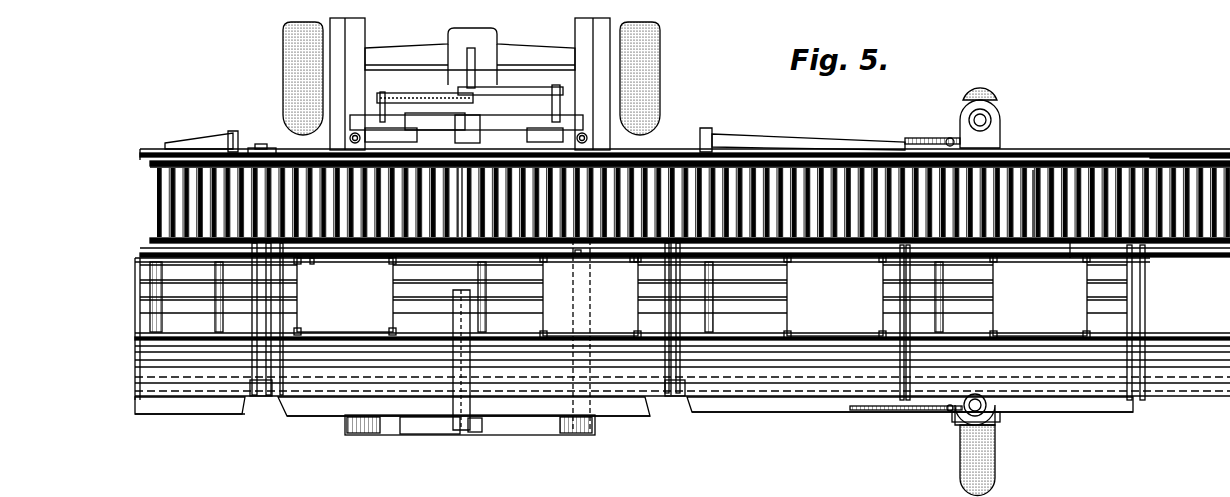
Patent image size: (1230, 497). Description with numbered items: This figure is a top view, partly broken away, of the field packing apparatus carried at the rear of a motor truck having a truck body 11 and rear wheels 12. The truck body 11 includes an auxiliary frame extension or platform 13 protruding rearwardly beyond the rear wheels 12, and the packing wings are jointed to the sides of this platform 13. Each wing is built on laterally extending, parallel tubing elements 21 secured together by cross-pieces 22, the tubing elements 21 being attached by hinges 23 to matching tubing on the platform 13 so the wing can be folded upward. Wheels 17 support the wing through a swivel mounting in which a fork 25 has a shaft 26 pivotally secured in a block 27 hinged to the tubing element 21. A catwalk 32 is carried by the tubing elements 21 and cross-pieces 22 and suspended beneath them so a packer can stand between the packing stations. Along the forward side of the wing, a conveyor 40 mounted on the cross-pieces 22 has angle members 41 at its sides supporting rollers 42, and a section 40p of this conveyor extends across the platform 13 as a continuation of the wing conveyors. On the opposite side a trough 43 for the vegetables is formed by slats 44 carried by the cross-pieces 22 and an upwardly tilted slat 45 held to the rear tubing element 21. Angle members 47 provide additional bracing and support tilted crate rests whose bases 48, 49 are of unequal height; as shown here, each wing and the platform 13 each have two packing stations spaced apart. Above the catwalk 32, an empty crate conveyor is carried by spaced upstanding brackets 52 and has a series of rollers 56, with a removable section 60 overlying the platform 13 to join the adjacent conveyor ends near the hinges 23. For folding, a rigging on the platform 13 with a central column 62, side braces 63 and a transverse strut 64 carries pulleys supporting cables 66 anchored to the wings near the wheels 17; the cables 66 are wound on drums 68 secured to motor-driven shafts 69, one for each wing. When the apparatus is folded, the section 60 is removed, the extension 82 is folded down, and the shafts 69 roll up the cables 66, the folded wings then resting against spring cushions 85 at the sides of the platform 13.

The truck body 11 is at (342, 42).
The rear wheels 12 is at (283, 53).
The auxiliary frame extension or platform 13 is at (350, 421).
The wheels 17 is at (1000, 96).
The tubing elements 21 is at (140, 150).
The cross-pieces 22 is at (670, 285).
The hinges 23 is at (253, 148).
The fork 25 is at (1002, 450).
The shaft 26 is at (978, 120).
The block 27 is at (1003, 118).
The catwalk 32 is at (147, 292).
The conveyor 40 is at (1053, 178).
The section of the conveyor 40p is at (640, 155).
The angle members 41 is at (1034, 172).
The rollers 42 is at (140, 338).
The trough 43 is at (147, 424).
The slats 44 is at (140, 368).
The upwardly tilted slat 45 is at (206, 410).
The angle members 47 is at (578, 255).
The base 48 is at (634, 260).
The base 49 is at (298, 260).
The upstanding brackets 52 is at (1145, 156).
The rollers 56 is at (178, 210).
The removable section 60 is at (280, 150).
The central column 62 is at (484, 120).
The side braces 63 is at (363, 434).
The transverse strut 64 is at (438, 115).
The cables 66 is at (915, 140).
The drums 68 is at (410, 142).
The shafts 69 is at (552, 105).
The extension 82 is at (1173, 152).
The spring cushions 85 is at (347, 139).